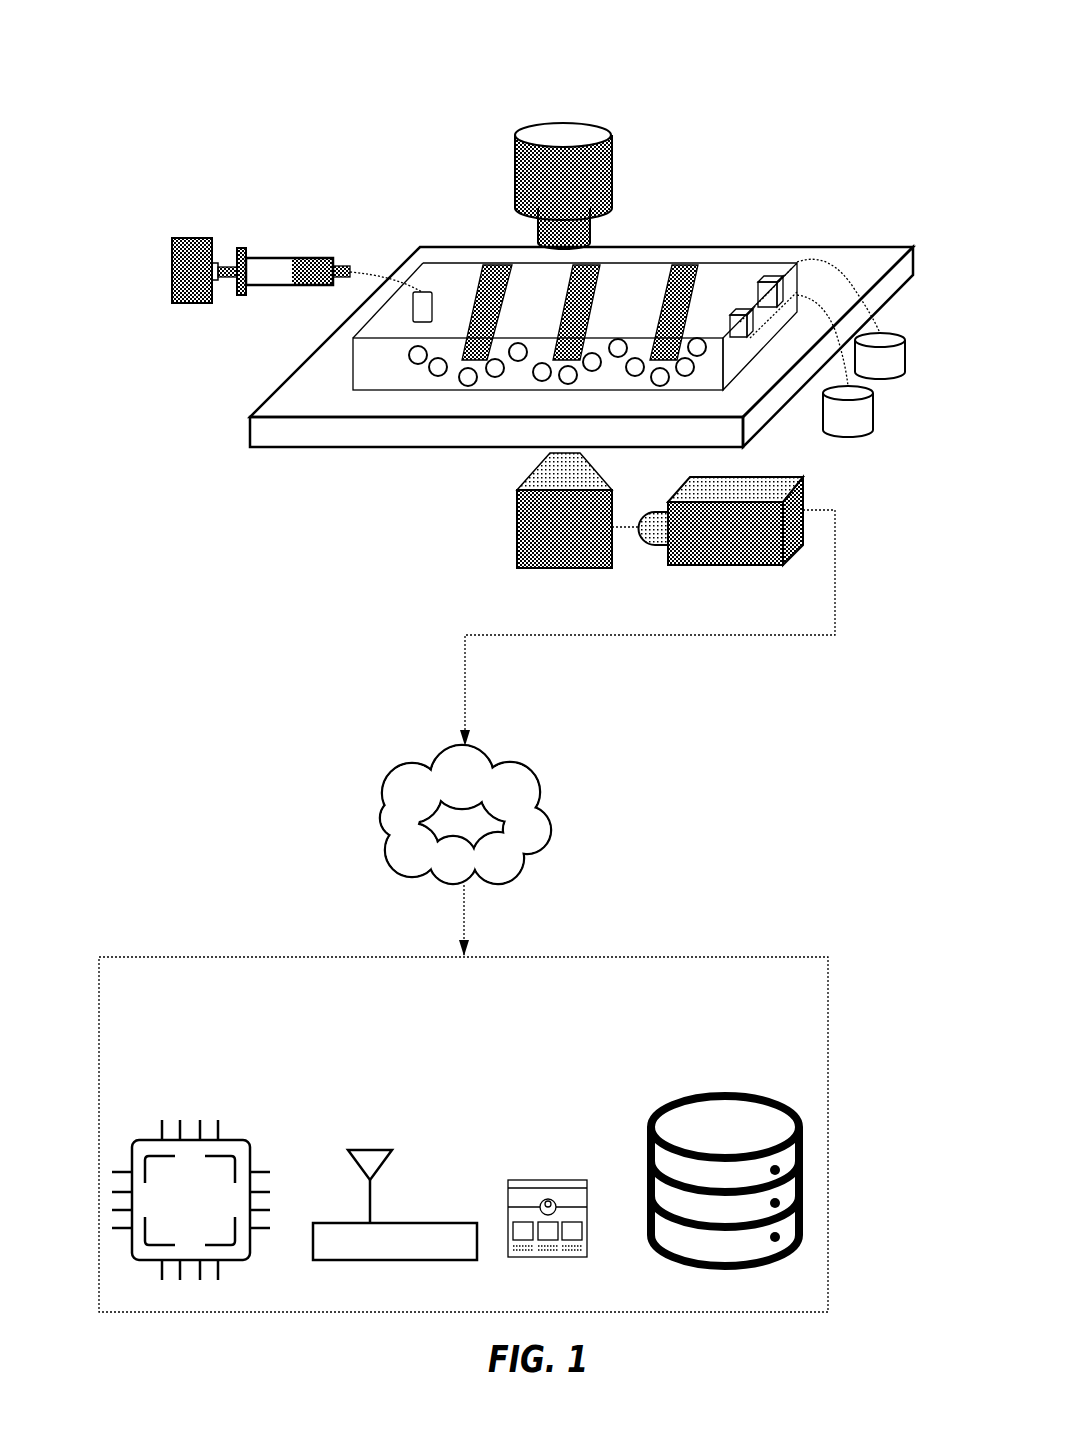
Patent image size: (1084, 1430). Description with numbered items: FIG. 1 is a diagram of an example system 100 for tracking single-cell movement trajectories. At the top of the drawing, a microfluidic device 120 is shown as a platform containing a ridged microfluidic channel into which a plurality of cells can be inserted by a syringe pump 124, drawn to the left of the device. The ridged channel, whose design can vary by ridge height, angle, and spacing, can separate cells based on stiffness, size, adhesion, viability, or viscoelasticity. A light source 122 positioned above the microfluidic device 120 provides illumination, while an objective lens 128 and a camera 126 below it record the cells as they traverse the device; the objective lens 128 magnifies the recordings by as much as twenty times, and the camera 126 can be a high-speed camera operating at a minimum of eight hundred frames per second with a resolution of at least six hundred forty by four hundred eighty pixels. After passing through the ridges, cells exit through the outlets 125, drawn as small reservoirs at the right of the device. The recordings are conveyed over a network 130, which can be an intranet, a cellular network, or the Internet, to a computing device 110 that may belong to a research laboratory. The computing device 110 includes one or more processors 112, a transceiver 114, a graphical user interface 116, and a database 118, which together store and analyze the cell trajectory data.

The system 100 is at (145, 42).
The computing device 110 is at (463, 1134).
The processors 112 is at (191, 1200).
The transceiver 114 is at (395, 1205).
The graphical user interface 116 is at (592, 1216).
The database 118 is at (725, 1181).
The microfluidic device 120 is at (654, 263).
The light source 122 is at (614, 171).
The syringe pump 124 is at (275, 245).
The outlets 125 is at (897, 395).
The camera 126 is at (805, 490).
The objective lens 128 is at (512, 527).
The network 130 is at (465, 814).